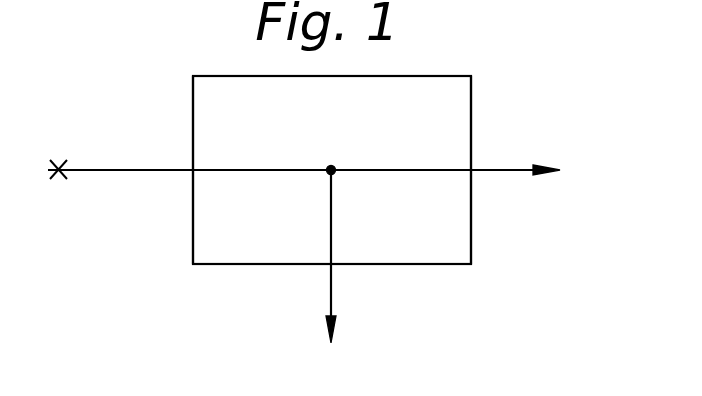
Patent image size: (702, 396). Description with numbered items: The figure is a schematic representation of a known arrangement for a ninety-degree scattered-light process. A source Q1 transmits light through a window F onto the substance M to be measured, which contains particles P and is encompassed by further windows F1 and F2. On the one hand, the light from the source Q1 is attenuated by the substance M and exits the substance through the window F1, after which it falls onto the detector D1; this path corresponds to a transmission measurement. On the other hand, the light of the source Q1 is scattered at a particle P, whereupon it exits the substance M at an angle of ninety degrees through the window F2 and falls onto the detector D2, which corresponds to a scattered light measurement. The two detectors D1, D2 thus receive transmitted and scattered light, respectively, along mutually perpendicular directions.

The substance to be measured M is at (213, 115).
The particle P is at (332, 147).
The source Q1 is at (35, 170).
The detector D1 is at (325, 171).
The detector D2 is at (331, 273).
The window F is at (193, 216).
The window F1 is at (471, 223).
The window F2 is at (388, 265).